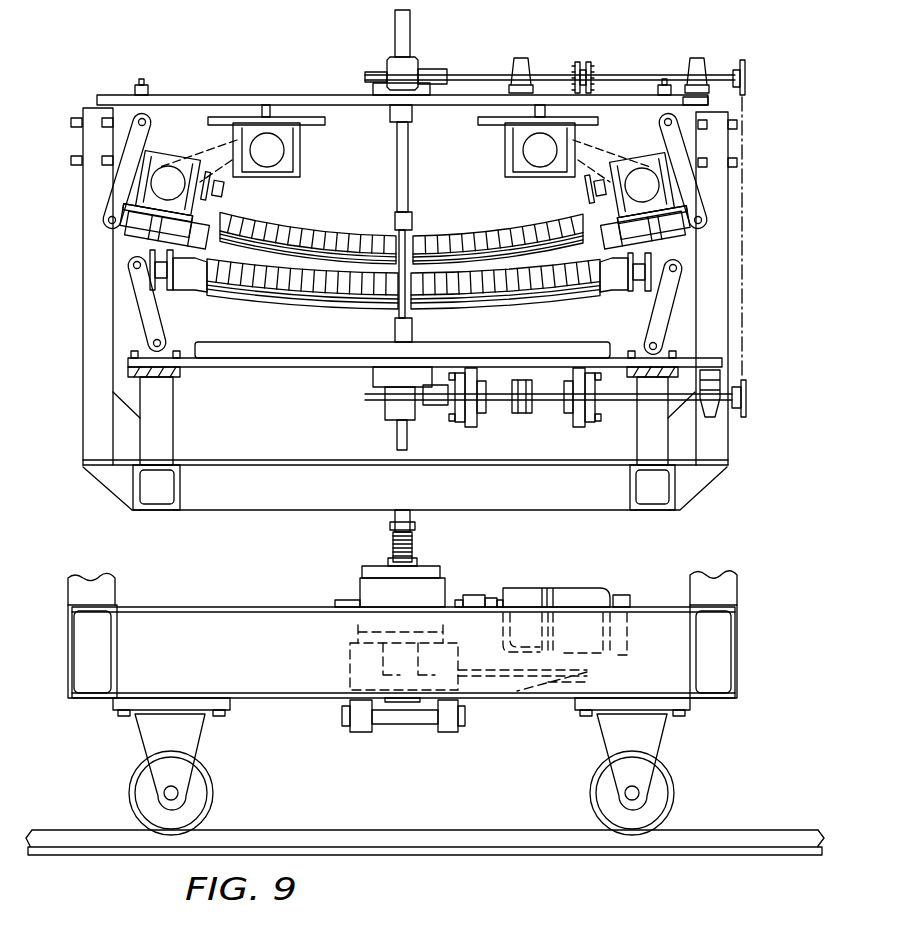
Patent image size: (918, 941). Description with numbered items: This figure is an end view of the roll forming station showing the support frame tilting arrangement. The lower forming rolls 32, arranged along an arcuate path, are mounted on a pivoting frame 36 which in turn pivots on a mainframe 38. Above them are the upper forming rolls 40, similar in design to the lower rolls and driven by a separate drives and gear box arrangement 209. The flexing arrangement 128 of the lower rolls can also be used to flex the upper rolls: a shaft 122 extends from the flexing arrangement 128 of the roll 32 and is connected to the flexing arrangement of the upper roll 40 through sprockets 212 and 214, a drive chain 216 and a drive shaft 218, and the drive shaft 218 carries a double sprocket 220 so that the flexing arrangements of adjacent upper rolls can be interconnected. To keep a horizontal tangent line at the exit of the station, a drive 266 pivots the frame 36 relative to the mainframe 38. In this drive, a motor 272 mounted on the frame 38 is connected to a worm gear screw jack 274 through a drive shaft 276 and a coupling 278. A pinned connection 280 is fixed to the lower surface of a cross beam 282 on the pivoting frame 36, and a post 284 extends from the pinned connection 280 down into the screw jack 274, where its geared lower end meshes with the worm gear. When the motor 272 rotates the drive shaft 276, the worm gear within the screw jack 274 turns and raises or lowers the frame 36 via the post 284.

The forming rolls 32 is at (270, 308).
The pivoting frame 36 is at (707, 492).
The mainframe 38 is at (738, 642).
The upper forming rolls 40 is at (295, 227).
The shaft 122 is at (610, 403).
The flexing arrangement 128 is at (510, 432).
The drives and gear box arrangement 209 is at (314, 153).
The sprocket 212 is at (748, 399).
The sprocket 214 is at (748, 73).
The drive chain 216 is at (743, 210).
The drive shaft 218 is at (637, 75).
The double sprocket 220 is at (581, 62).
The drive 266 is at (620, 596).
The motor 272 is at (530, 588).
The screw jack 274 is at (358, 588).
The drive shaft 276 is at (497, 597).
The coupling 278 is at (474, 597).
The pinned connection 280 is at (392, 522).
The cross beam 282 is at (230, 510).
The post 284 is at (392, 541).